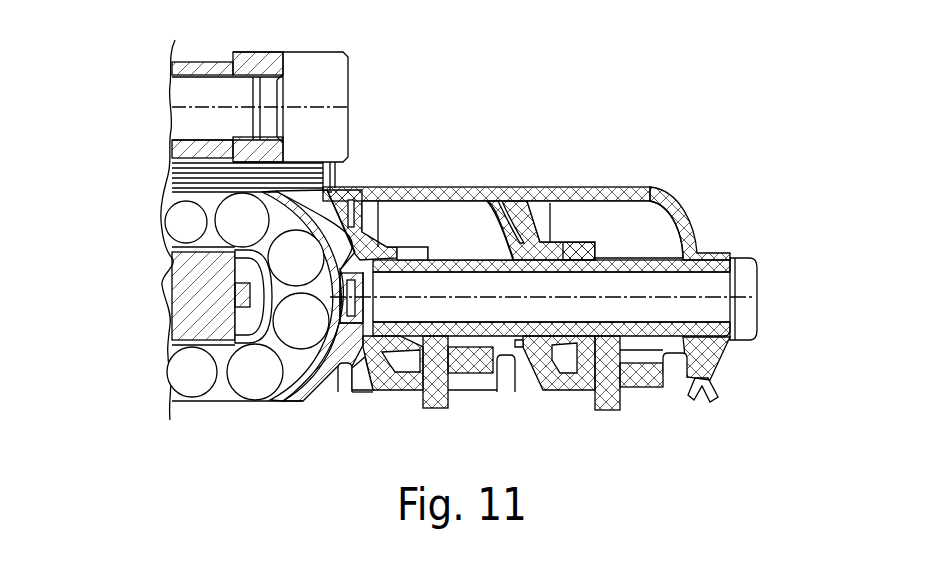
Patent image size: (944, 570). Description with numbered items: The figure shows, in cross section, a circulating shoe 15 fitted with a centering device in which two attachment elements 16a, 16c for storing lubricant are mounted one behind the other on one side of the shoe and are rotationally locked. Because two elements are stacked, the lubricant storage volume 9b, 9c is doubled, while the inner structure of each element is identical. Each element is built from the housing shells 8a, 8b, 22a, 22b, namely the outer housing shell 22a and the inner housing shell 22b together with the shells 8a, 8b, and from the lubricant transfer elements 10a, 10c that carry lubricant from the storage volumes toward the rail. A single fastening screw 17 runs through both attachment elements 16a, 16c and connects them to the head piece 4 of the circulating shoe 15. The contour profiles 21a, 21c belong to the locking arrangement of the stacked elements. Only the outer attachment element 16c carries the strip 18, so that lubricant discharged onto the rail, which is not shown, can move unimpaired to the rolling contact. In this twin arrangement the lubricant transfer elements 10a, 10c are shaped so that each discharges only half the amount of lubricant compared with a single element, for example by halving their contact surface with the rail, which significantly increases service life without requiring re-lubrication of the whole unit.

The head piece 4 is at (318, 388).
The housing shell 8a is at (470, 193).
The housing shell 8b is at (352, 218).
The storage volume 9b is at (410, 220).
The storage volume 9c is at (602, 217).
The lubricant transfer element 10a is at (437, 383).
The lubricant transfer element 10c is at (603, 393).
The circulating shoe 15 is at (150, 272).
The attachment element 16a is at (478, 97).
The attachment element 16c is at (645, 97).
The fastening screw 17 is at (750, 307).
The strip 18 is at (720, 384).
The contour profile 21a is at (360, 355).
The contour profile 21c is at (520, 343).
The outer housing shell 22a is at (648, 195).
The inner housing shell 22b is at (520, 212).